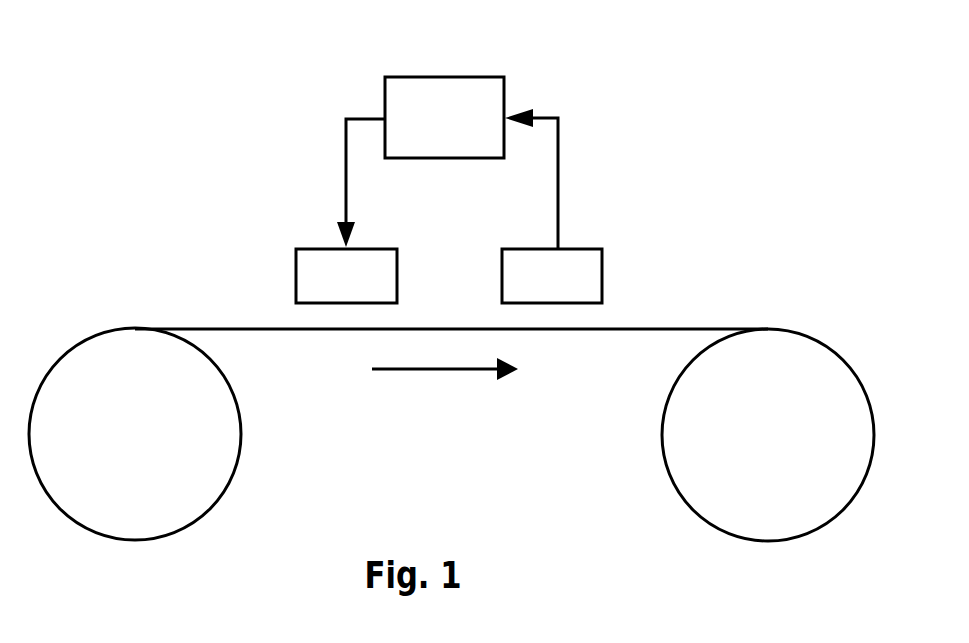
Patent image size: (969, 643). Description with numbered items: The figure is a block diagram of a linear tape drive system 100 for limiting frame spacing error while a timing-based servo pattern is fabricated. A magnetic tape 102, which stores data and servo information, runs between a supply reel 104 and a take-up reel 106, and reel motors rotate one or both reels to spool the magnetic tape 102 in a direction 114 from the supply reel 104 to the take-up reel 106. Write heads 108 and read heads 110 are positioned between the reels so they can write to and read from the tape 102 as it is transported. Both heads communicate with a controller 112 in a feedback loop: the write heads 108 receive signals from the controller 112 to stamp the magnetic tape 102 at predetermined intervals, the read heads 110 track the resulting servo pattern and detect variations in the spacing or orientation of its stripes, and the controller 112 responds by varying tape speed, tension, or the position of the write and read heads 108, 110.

The linear tape drive system 100 is at (186, 96).
The magnetic tape 102 is at (689, 328).
The supply reel 104 is at (112, 447).
The take-up reel 106 is at (744, 442).
The write heads 108 is at (320, 290).
The read heads 110 is at (525, 290).
The controller 112 is at (420, 131).
The direction 114 is at (437, 371).